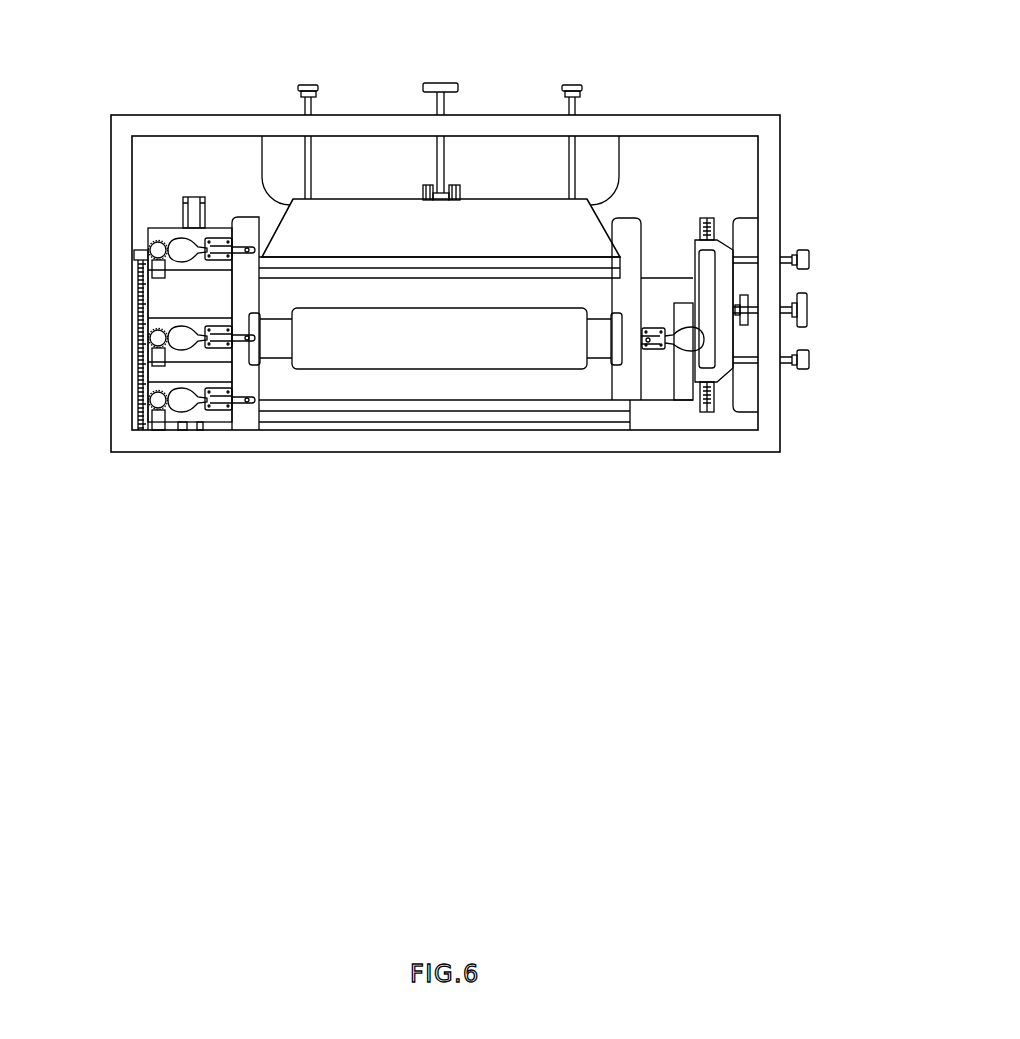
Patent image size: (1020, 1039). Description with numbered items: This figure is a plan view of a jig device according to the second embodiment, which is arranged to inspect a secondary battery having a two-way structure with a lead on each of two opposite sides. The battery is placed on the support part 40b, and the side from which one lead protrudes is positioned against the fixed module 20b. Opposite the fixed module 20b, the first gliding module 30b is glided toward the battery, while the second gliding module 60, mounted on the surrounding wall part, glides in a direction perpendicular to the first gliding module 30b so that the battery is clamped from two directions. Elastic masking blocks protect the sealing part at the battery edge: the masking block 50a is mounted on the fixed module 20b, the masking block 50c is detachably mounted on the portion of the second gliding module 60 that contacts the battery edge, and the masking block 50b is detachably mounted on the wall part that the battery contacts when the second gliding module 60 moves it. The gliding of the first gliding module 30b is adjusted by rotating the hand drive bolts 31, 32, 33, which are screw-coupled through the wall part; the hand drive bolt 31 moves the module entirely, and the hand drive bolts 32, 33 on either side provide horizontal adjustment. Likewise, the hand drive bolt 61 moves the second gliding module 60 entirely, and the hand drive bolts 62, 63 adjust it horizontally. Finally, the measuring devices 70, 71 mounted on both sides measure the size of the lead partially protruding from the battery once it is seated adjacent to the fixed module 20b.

The fixed module 20b is at (148, 232).
The measuring device 70 is at (140, 387).
The masking block 50a is at (245, 227).
The masking block 50b is at (384, 404).
The masking block 50c is at (367, 258).
The second gliding module 60 is at (507, 230).
The hand drive bolt 61 is at (440, 81).
The hand drive bolt 62 is at (308, 82).
The hand drive bolt 63 is at (572, 82).
The measuring device 71 is at (707, 227).
The hand drive bolt 31 is at (808, 310).
The hand drive bolt 32 is at (810, 358).
The hand drive bolt 33 is at (810, 258).
The first gliding module 30b is at (683, 377).
The support part 40b is at (468, 355).